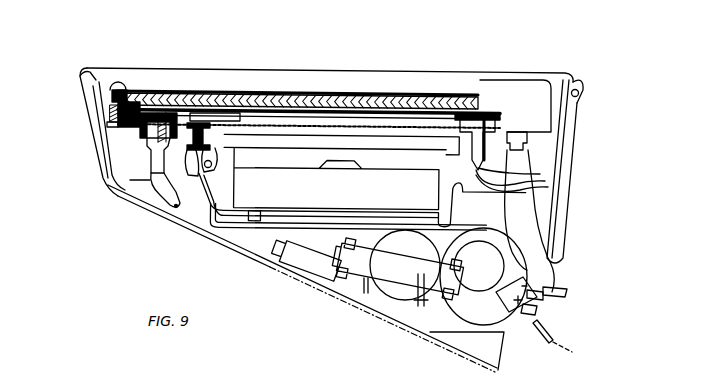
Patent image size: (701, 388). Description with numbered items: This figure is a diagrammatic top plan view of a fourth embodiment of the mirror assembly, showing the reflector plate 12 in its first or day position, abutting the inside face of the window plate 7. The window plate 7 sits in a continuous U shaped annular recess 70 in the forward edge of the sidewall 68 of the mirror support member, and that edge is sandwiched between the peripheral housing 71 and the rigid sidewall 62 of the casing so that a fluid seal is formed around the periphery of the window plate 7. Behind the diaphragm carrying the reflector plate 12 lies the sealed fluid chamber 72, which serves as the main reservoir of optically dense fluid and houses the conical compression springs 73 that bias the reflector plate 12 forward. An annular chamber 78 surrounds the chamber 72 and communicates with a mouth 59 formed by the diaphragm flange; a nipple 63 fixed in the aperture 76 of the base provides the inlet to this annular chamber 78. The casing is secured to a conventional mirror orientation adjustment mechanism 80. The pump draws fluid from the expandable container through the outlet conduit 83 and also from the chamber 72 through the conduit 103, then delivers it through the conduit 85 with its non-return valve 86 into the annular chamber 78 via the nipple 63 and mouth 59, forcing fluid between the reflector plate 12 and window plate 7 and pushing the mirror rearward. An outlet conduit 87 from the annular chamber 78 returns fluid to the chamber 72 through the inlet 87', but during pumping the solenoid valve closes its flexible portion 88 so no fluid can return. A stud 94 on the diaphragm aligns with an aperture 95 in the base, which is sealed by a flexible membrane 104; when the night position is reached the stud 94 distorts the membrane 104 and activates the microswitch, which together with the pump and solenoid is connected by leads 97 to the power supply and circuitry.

The window plate 7 is at (383, 100).
The reflector plate 12 is at (417, 110).
The mouth 59 is at (162, 112).
The sidewall 62 is at (128, 118).
The nipple 63 is at (148, 137).
The sidewall 68 is at (114, 108).
The annular recess 70 is at (118, 88).
The peripheral housing 71 is at (123, 82).
The sealed fluid chamber 72 is at (265, 116).
The conical compression springs 73 is at (310, 112).
The aperture 76 is at (136, 128).
The annular chamber 78 is at (127, 100).
The mirror orientation adjustment mechanism 80 is at (258, 205).
The outlet conduit 83 is at (300, 232).
The conduit 85 is at (195, 196).
The non-return valve 86 is at (300, 258).
The outlet conduit 87 is at (555, 222).
The inlet 87' is at (306, 278).
The flexible portion 88 is at (420, 278).
The stud 94 is at (463, 100).
The aperture 95 is at (483, 150).
The leads 97 is at (560, 298).
The outlet conduit 103 is at (165, 198).
The flexible membrane 104 is at (480, 108).